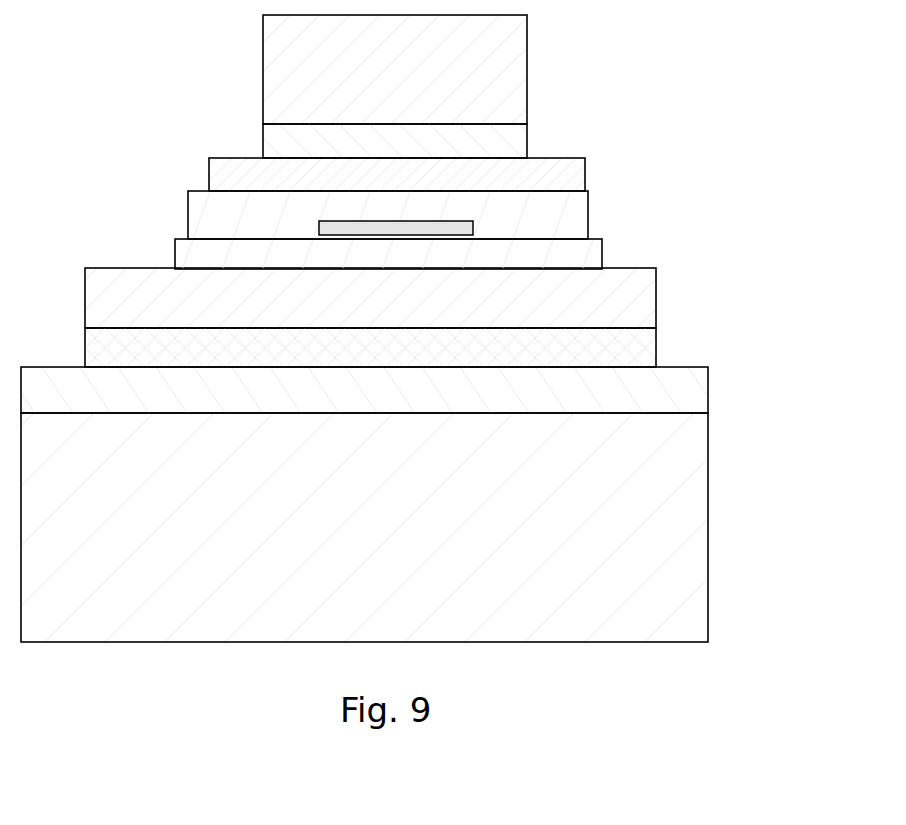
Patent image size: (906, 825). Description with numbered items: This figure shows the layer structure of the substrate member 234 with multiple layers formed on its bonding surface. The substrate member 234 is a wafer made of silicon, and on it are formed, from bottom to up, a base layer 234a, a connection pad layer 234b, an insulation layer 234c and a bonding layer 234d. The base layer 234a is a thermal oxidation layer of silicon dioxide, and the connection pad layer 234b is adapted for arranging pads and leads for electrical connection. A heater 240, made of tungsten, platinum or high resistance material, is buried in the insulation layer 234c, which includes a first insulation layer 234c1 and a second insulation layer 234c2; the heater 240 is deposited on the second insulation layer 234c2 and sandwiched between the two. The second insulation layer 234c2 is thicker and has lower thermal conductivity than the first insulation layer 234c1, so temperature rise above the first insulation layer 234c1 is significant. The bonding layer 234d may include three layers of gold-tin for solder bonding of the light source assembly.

The substrate member 234 is at (673, 520).
The base layer 234a is at (697, 402).
The connection pad layer 234b is at (673, 270).
The insulation layer 234c is at (370, 223).
The first insulation layer 234c1 is at (203, 212).
The second insulation layer 234c2 is at (185, 257).
The bonding layer 234d is at (598, 8).
The heater 240 is at (338, 229).